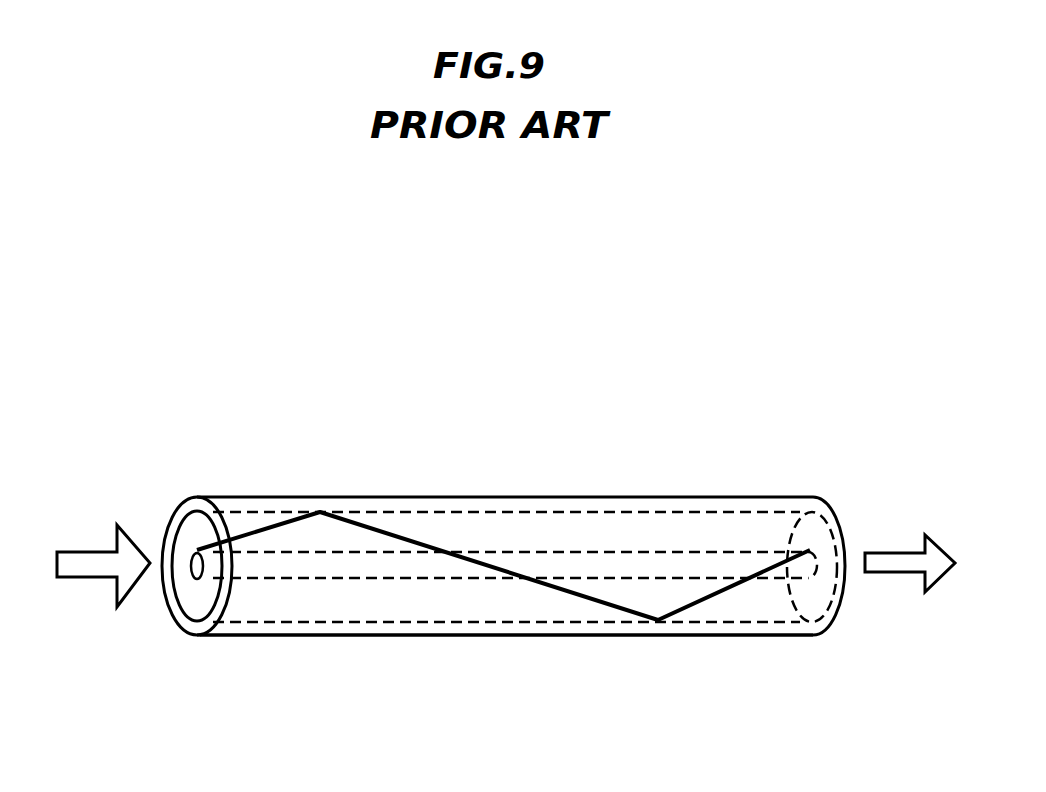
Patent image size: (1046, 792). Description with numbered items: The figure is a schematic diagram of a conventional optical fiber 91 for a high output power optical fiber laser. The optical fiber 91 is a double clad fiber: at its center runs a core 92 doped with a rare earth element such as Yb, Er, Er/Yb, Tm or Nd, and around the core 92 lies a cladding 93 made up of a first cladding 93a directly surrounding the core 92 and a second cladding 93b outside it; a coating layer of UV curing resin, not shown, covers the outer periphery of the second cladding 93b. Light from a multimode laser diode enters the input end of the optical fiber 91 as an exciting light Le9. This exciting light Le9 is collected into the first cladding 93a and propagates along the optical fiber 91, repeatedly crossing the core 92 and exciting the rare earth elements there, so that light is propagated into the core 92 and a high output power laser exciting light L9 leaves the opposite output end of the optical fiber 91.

The optical fiber 91 is at (632, 405).
The core 92 is at (704, 545).
The cladding 93 is at (652, 643).
The first cladding 93a is at (416, 523).
The second cladding 93b is at (397, 627).
The exciting light Le9 is at (90, 550).
The laser exciting light L9 is at (935, 545).